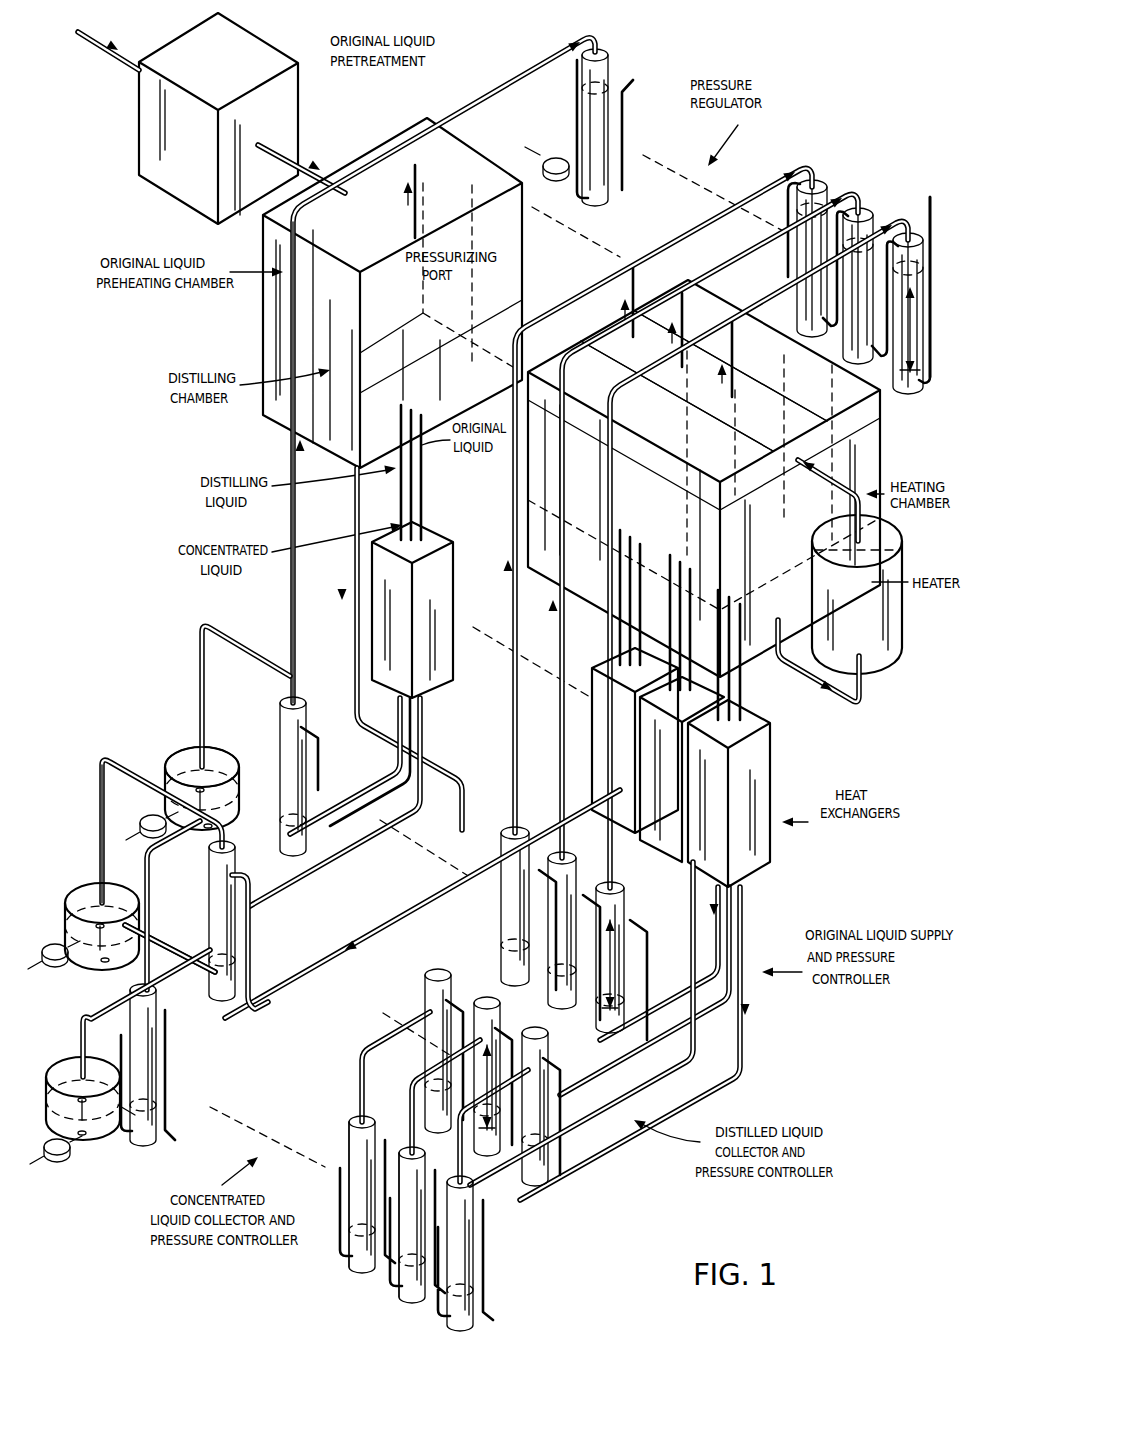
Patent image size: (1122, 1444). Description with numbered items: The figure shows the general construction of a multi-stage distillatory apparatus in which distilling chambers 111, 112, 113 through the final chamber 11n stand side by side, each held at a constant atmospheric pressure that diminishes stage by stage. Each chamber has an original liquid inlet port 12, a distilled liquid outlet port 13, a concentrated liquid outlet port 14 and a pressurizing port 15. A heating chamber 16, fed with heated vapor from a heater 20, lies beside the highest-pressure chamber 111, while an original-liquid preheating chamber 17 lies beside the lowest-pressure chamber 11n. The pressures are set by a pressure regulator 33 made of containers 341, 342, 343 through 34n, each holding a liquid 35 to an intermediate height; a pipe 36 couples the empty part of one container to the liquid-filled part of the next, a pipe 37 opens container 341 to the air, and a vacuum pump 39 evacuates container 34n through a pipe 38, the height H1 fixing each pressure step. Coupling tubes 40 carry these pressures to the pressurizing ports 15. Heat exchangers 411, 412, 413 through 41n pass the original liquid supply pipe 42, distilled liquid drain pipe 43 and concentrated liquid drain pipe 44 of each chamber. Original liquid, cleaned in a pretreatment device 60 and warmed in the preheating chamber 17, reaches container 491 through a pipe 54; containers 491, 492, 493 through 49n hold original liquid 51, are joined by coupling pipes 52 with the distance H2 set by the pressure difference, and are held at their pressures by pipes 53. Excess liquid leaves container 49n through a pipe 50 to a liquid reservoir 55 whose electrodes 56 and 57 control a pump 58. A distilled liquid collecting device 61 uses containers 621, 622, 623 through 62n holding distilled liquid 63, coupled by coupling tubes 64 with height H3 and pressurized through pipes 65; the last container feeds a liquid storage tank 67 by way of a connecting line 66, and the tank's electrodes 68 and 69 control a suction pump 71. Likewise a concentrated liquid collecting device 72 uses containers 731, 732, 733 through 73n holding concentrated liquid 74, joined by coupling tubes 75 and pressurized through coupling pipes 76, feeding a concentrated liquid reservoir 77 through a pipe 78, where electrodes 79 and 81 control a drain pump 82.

The pretreatment device 60 is at (272, 50).
The distilling chamber 11n is at (395, 246).
The original-liquid preheating chamber 17 is at (262, 310).
The pressurizing port 15 is at (414, 176).
The distilling chamber 111 is at (718, 424).
The distilling chamber 112 is at (674, 398).
The distilling chamber 113 is at (628, 372).
The heating chamber 16 is at (879, 458).
The heater 20 is at (880, 650).
The pressure regulator 33 is at (862, 160).
The container 34n is at (604, 55).
The container 341 is at (910, 236).
The container 342 is at (862, 210).
The container 343 is at (820, 182).
The liquid 35 is at (790, 258).
The pipe 36 is at (887, 240).
The pipe 37 is at (935, 195).
The pipe 38 is at (575, 102).
The vacuum pump 39 is at (552, 155).
The coupling tube 40 is at (475, 108).
The height H1 is at (910, 329).
The heat exchanger 41n is at (445, 598).
The heat exchanger 411 is at (722, 780).
The heat exchanger 412 is at (665, 795).
The heat exchanger 413 is at (592, 680).
The original liquid inlet port 12 is at (410, 462).
The distilled liquid outlet port 13 is at (418, 483).
The concentrated liquid outlet port 14 is at (423, 504).
The original liquid supply pipe 42 is at (410, 714).
The distilled liquid drain pipe 43 is at (420, 728).
The concentrated liquid drain pipe 44 is at (422, 742).
The pipe 53 is at (296, 688).
The pipe 54 is at (350, 512).
The container 49n is at (303, 712).
The container 491 is at (606, 1030).
The container 492 is at (572, 852).
The container 493 is at (524, 826).
The coupling pipe 52 is at (322, 772).
The original liquid 51 is at (230, 770).
The pipe 50 is at (250, 815).
The liquid reservoir 55 is at (222, 760).
The electrode 56 is at (196, 765).
The electrode 57 is at (206, 830).
The pump 58 is at (148, 815).
The distance H2 is at (611, 965).
The distilled liquid collecting device 61 is at (632, 1202).
The container 62n is at (236, 860).
The container 621 is at (548, 1096).
The container 622 is at (475, 1050).
The container 623 is at (452, 970).
The distilled liquid 63 is at (80, 897).
The coupling tube 64 is at (250, 945).
The pipe 65 is at (226, 828).
The tank pipe 66 is at (186, 940).
The liquid storage tank 67 is at (120, 895).
The highest level detecting electrode 68 is at (100, 900).
The lowest level detecting electrode 69 is at (102, 963).
The distilled liquid suction pump 71 is at (56, 965).
The height H3 is at (488, 1087).
The concentrated liquid collecting device 72 is at (560, 1303).
The container 73n is at (158, 1000).
The container 731 is at (474, 1265).
The container 732 is at (410, 1148).
The container 733 is at (350, 1145).
The concentrated liquid tank 74 is at (75, 1075).
The coupling tube 75 is at (168, 1090).
The coupling pipe 76 is at (150, 955).
The concentrated liquid reservoir 77 is at (126, 1125).
The pipe 78 is at (130, 1135).
The highest liquid level detecting electrode 79 is at (88, 1096).
The lowest liquid level detecting electrode 81 is at (86, 1140).
The concentrated liquid drain pump 82 is at (60, 1158).